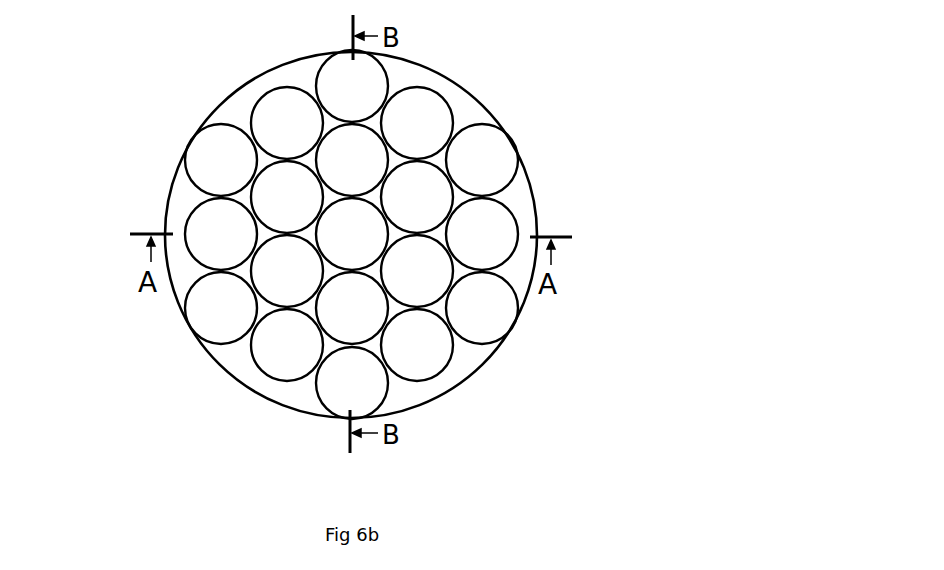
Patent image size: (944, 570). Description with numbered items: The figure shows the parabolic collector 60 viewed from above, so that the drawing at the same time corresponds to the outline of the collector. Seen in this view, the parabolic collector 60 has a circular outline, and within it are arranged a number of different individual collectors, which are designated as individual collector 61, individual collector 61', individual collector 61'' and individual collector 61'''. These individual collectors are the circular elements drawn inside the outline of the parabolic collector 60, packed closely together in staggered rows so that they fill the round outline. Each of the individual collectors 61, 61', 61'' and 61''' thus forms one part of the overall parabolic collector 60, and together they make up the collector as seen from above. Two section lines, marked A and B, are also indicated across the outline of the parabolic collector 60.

The parabolic collector 60 is at (527, 64).
The individual collector 61 is at (546, 123).
The individual collector 61' is at (581, 234).
The individual collector 61'' is at (144, 234).
The individual collector 61''' is at (210, 86).